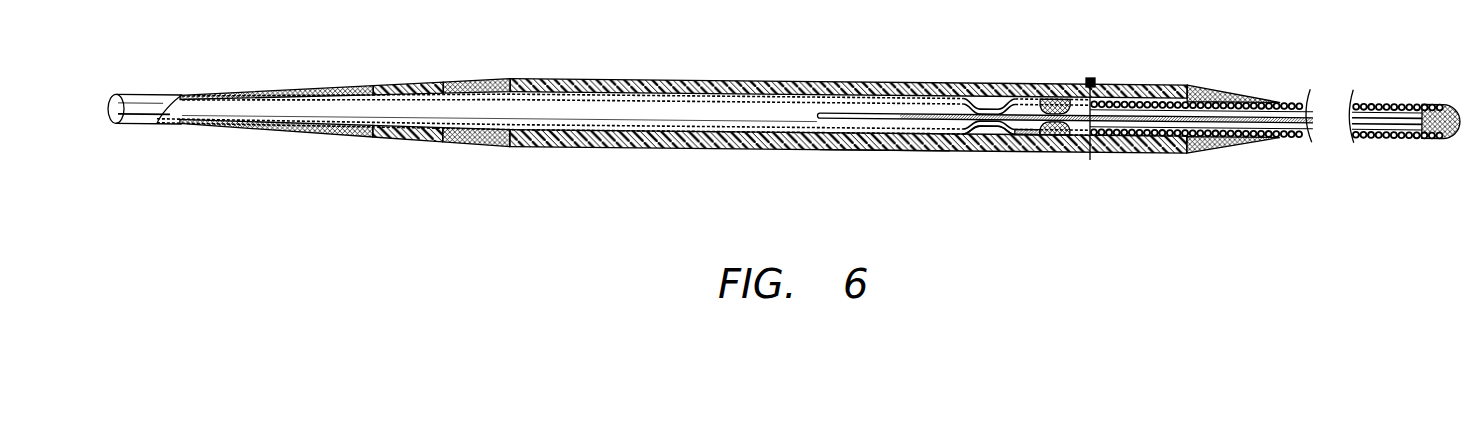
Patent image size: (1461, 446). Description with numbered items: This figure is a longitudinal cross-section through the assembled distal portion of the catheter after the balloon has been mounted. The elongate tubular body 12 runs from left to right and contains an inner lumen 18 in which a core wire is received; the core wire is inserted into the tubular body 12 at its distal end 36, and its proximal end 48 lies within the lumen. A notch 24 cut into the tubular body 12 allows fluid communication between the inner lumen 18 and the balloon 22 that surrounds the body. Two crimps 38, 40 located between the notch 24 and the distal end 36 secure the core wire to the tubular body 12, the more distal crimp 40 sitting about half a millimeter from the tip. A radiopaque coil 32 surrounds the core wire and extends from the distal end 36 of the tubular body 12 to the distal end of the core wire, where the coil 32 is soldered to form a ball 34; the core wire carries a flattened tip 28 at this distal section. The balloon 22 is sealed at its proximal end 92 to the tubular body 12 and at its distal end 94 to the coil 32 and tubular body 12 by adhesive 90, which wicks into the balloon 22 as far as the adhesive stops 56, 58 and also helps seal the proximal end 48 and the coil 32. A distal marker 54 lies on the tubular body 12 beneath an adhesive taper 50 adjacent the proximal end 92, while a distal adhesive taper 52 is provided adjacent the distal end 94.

The tubular body 12 is at (160, 92).
The inner lumen 18 is at (103, 84).
The balloon 22 is at (968, 80).
The notch 24 is at (843, 111).
The flattened tip 28 is at (1404, 123).
The coil 32 is at (1272, 100).
The ball 34 is at (1456, 104).
The distal end of tubular body 36 is at (1090, 78).
The crimp 38 is at (979, 149).
The crimp 40 is at (1052, 150).
The proximal end of core wire 48 is at (898, 122).
The adhesive taper 50 is at (470, 79).
The distal adhesive taper 52 is at (1203, 85).
The distal marker 54 is at (394, 80).
The adhesive stop 56 is at (716, 133).
The adhesive stop 58 is at (1028, 140).
The adhesive 90 is at (568, 79).
The proximal end of balloon 92 is at (508, 62).
The distal end of balloon 94 is at (1186, 62).